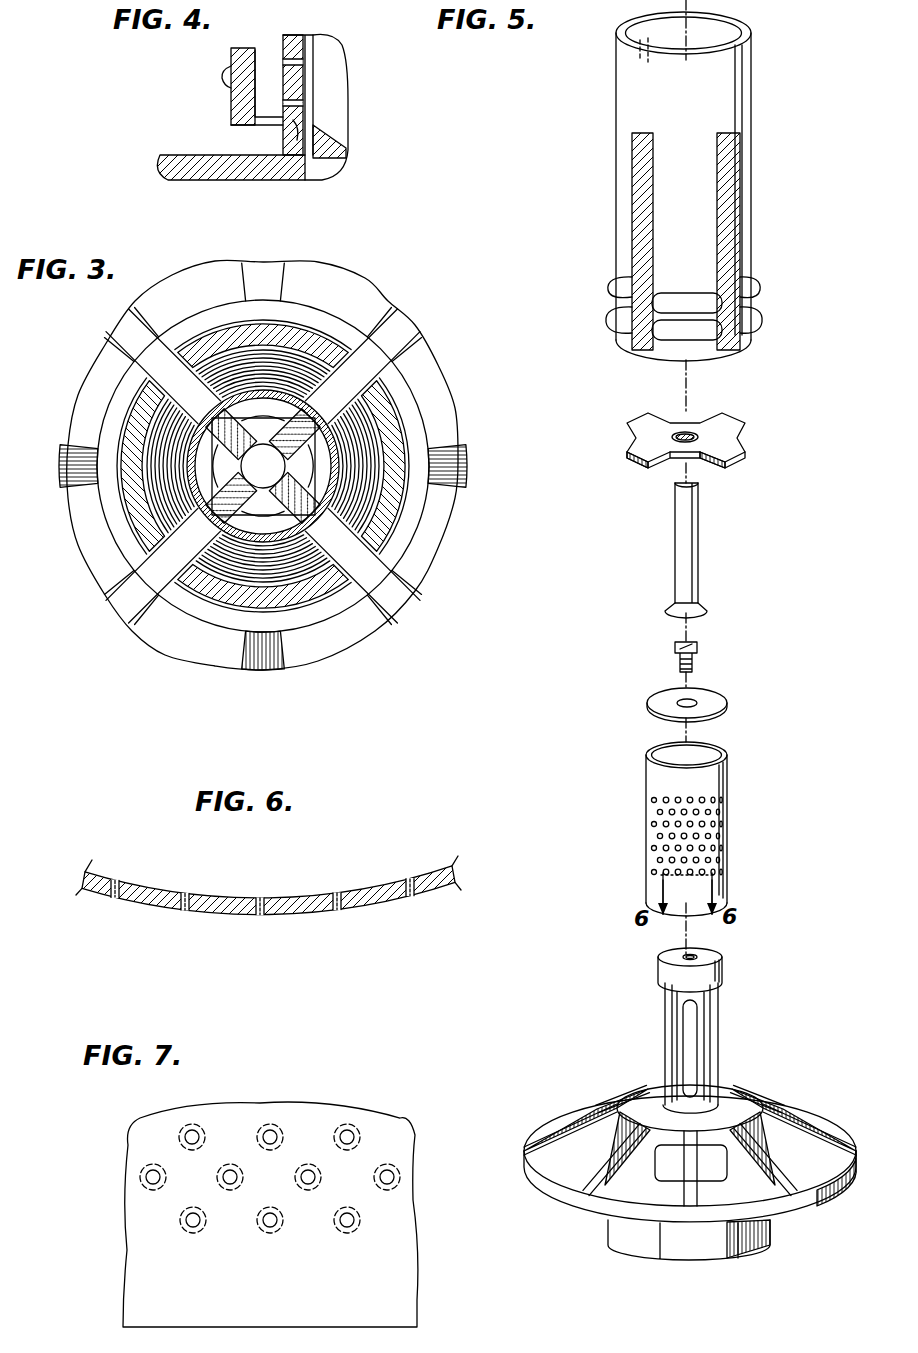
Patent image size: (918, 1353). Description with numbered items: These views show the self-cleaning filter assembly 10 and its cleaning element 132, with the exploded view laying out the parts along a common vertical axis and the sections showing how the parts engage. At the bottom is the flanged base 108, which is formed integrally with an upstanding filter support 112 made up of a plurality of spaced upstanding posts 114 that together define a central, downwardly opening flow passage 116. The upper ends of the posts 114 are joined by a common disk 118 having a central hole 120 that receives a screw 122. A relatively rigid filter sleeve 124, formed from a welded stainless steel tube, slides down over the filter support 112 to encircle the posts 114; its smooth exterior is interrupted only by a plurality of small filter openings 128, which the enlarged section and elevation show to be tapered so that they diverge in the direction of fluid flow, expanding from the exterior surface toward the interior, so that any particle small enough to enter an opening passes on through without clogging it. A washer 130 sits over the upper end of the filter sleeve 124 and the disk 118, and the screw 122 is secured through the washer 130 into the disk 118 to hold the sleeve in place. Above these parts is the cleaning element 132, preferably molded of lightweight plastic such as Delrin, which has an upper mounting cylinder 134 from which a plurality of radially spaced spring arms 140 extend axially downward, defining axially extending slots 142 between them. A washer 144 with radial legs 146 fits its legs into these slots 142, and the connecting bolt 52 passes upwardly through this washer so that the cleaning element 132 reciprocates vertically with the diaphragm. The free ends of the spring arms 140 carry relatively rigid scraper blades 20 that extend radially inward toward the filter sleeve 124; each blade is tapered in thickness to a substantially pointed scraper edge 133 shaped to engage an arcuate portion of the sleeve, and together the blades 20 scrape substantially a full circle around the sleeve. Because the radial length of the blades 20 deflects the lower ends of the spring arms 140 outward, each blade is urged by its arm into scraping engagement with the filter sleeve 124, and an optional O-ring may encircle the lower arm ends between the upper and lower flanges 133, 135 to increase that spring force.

In FIG. 5, the self-cleaning filter assembly 10 is at (812, 129).
In FIG. 4, the scraper blades 20 is at (258, 120).
In FIG. 3, the scraper blades 20 is at (160, 432).
In FIG. 5, the connecting bolt 52 is at (700, 543).
In FIG. 4, the flanged base 108 is at (303, 168).
In FIG. 5, the flanged base 108 is at (737, 1104).
In FIG. 3, the flanged base 108 is at (375, 301).
In FIG. 5, the filter support 112 is at (663, 1008).
In FIG. 3, the filter support 112 is at (93, 589).
In FIG. 5, the upstanding posts 114 is at (680, 1060).
In FIG. 3, the upstanding posts 114 is at (368, 514).
In FIG. 5, the flow passage 116 is at (692, 1028).
In FIG. 3, the flow passage 116 is at (265, 489).
In FIG. 5, the disk 118 is at (665, 973).
In FIG. 5, the central hole 120 is at (698, 955).
In FIG. 5, the screw 122 is at (705, 651).
In FIG. 4, the filter sleeve 124 is at (294, 118).
In FIG. 5, the filter sleeve 124 is at (660, 781).
In FIG. 3, the filter sleeve 124 is at (164, 660).
In FIG. 6, the filter sleeve 124 is at (312, 898).
In FIG. 7, the filter sleeve 124 is at (150, 1267).
In FIG. 4, the filter openings 128 is at (300, 103).
In FIG. 5, the filter openings 128 is at (705, 838).
In FIG. 6, the filter openings 128 is at (345, 903).
In FIG. 7, the filter openings 128 is at (150, 1176).
In FIG. 5, the washer 130 is at (660, 698).
In FIG. 5, the cleaning element 132 is at (608, 186).
In FIG. 4, the scraper edge 133 is at (293, 122).
In FIG. 5, the scraper edge 133 is at (750, 283).
In FIG. 3, the scraper edge 133 is at (207, 490).
In FIG. 5, the mounting cylinder 134 is at (710, 82).
In FIG. 4, the lower flange 135 is at (224, 80).
In FIG. 5, the lower flange 135 is at (752, 318).
In FIG. 4, the spring arms 140 is at (231, 62).
In FIG. 5, the spring arms 140 is at (700, 258).
In FIG. 3, the spring arms 140 is at (288, 603).
In FIG. 5, the slots 142 is at (638, 228).
In FIG. 3, the slots 142 is at (400, 376).
In FIG. 5, the washer 144 is at (706, 437).
In FIG. 5, the radial legs 146 is at (634, 458).